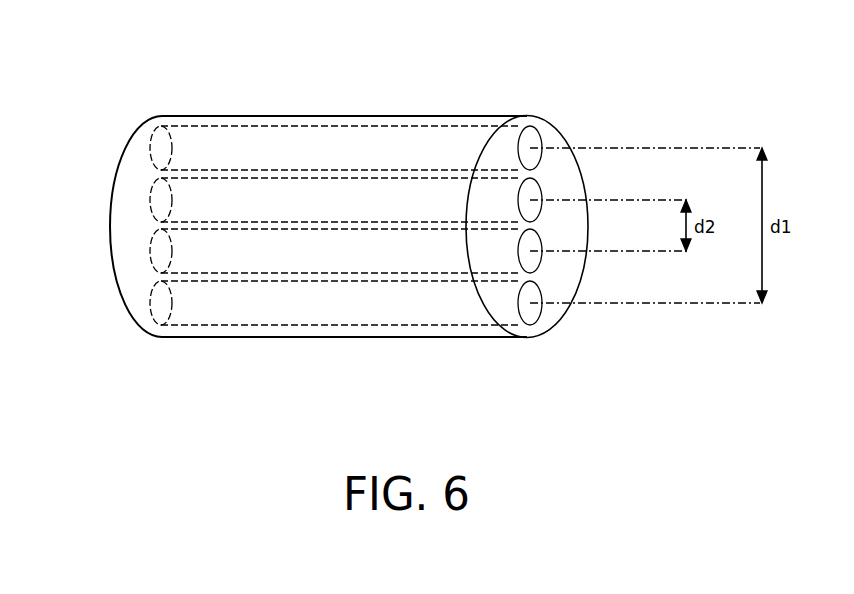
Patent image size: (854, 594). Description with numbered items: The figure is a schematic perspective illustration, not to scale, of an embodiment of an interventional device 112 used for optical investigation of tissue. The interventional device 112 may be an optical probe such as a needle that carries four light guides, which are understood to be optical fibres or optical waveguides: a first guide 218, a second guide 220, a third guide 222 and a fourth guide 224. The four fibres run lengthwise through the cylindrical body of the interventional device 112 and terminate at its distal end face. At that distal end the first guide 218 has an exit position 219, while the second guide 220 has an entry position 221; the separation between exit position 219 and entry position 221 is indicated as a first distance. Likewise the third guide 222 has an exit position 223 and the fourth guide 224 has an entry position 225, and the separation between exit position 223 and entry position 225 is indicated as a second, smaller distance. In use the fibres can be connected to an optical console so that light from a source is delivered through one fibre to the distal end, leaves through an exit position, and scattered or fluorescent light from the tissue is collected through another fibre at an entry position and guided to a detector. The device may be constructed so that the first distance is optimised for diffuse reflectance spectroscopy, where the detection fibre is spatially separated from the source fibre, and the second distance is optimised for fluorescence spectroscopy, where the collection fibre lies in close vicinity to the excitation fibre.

The interventional device 112 is at (340, 202).
The first guide 218 is at (345, 140).
The second guide 220 is at (346, 312).
The exit position 219 is at (530, 136).
The exit position 223 is at (532, 190).
The entry position 225 is at (535, 262).
The entry position 221 is at (532, 318).
The third guide 222 is at (197, 202).
The fourth guide 224 is at (197, 249).